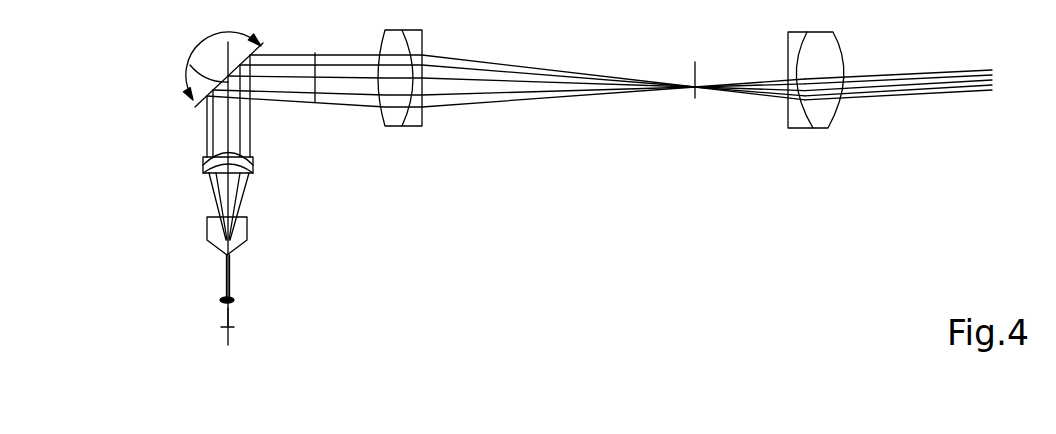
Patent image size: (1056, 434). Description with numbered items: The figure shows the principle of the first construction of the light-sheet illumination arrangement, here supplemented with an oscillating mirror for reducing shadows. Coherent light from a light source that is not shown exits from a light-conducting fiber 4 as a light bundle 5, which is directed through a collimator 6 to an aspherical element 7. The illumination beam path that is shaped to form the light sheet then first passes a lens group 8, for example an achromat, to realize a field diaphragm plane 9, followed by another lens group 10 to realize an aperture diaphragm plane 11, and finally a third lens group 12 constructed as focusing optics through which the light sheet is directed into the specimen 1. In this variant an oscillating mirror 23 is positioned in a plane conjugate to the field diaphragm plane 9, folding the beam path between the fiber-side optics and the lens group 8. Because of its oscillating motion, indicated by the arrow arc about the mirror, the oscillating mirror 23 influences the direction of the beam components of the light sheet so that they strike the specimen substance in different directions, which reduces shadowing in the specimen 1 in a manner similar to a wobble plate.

The specimen 1 is at (995, 86).
The light-conducting fiber 4 is at (228, 338).
The light bundle 5 is at (228, 317).
The collimator 6 is at (220, 302).
The aspherical element 7 is at (243, 237).
The lens group 8 is at (203, 169).
The field diaphragm plane 9 is at (320, 97).
The lens group 10 is at (413, 113).
The aperture diaphragm plane 11 is at (695, 98).
The third lens group 12 is at (796, 121).
The oscillating mirror 23 is at (191, 68).